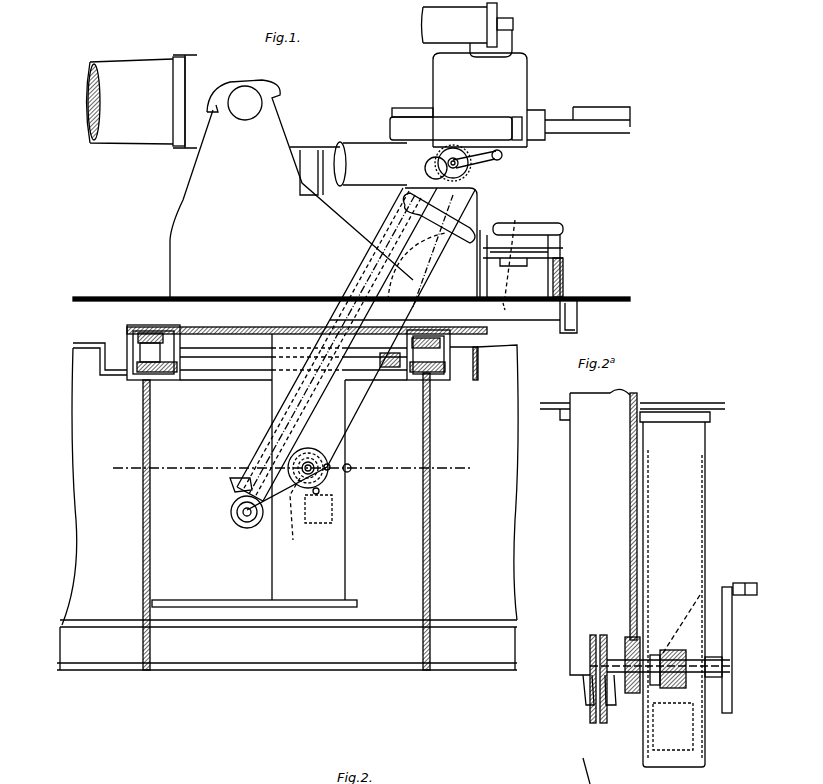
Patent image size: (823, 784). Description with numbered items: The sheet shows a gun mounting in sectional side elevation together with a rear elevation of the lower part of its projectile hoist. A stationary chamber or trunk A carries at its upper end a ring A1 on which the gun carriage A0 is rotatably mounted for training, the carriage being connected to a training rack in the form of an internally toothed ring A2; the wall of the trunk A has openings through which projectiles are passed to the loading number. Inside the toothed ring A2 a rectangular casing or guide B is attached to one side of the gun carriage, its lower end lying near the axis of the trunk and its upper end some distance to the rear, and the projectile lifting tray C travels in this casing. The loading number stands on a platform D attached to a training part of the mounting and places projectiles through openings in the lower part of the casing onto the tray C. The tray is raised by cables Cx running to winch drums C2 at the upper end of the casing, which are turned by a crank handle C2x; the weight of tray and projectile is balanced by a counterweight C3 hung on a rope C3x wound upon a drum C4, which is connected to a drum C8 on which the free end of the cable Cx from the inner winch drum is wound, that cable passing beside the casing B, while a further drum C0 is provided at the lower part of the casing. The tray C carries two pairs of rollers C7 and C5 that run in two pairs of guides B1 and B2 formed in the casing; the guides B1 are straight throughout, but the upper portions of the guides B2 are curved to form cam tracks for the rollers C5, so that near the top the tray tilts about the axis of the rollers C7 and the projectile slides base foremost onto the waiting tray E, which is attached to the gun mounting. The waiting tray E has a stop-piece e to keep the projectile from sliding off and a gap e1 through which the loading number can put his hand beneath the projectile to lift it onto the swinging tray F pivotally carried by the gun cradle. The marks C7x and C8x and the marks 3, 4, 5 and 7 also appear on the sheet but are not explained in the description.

In FIG. 1, the gun carriage A0 is at (190, 245).
In FIG. 1, the stationary chamber or trunk A is at (432, 503).
In FIG. 1, the ring A1 is at (172, 376).
In FIG. 1, the training rack ring A2 is at (172, 370).
In FIG. 1, the casing or guide B is at (330, 383).
In FIG. 2A, the casing or guide B is at (593, 471).
In FIG. 1, the guides B1 is at (300, 322).
In FIG. 1, the guides B2 is at (355, 270).
In FIG. 1, the projectile lifting tray C is at (262, 450).
In FIG. 1, the drum C0 is at (330, 455).
In FIG. 2A, the drum C0 is at (590, 652).
In FIG. 1, the winch drums C2 is at (462, 156).
In FIG. 1, the crank handle C2x is at (480, 164).
In FIG. 1, the counterweight C3 is at (327, 505).
In FIG. 2A, the counterweight C3 is at (663, 735).
In FIG. 1, the rope C3x is at (330, 479).
In FIG. 2A, the rope C3x is at (667, 692).
In FIG. 1, the drum C4 is at (295, 518).
In FIG. 2A, the drum C4 is at (705, 592).
In FIG. 1, the rollers C5 is at (256, 417).
In FIG. 1, the rollers C7 is at (405, 193).
In FIG. 1, the roller C7x is at (258, 516).
In FIG. 2A, the drum C8 is at (628, 638).
In FIG. 2A, the handle lever C8x is at (732, 613).
In FIG. 1, the cable Cx is at (397, 313).
In FIG. 2A, the cable Cx is at (635, 396).
In FIG. 1, the platform D is at (270, 607).
In FIG. 1, the waiting tray E is at (560, 257).
In FIG. 1, the stop-piece e is at (560, 253).
In FIG. 1, the gap e1 is at (520, 250).
In FIG. 1, the swinging tray F is at (612, 132).
In FIG. 1, the axis line 3 is at (290, 468).
In FIG. 1, the beam 4 is at (352, 249).
In FIG. 1, the shaft 5 is at (318, 345).
In FIG. 1, the pin 7 is at (506, 263).